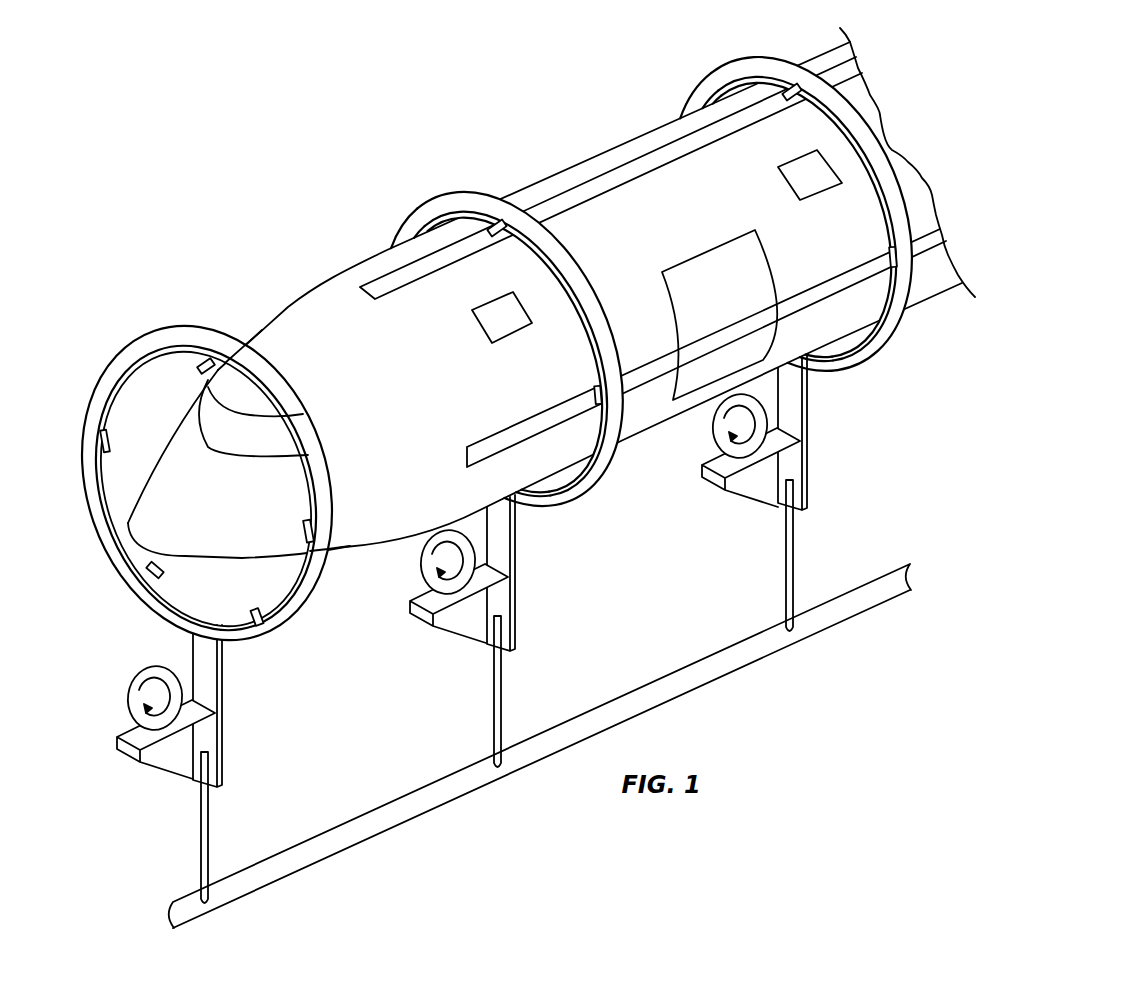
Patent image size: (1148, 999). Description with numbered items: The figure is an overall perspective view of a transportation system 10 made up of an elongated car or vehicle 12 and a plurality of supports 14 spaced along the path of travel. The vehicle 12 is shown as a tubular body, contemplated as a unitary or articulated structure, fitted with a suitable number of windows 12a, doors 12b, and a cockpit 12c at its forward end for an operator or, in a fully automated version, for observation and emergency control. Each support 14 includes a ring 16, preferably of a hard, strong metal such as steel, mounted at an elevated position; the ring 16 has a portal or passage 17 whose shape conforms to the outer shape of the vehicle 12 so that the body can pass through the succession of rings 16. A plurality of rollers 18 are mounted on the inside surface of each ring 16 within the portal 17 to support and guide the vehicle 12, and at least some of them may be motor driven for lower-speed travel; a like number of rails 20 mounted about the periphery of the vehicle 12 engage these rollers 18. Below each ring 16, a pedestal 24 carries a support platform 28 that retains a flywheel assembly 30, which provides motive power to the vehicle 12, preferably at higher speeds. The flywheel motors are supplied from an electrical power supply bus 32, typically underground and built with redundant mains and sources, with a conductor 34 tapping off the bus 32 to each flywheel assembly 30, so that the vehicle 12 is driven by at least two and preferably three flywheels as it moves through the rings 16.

The transportation system 10 is at (306, 200).
The car or vehicle 12 is at (618, 142).
The windows 12a is at (514, 338).
The doors 12b is at (712, 250).
The cockpit 12c is at (242, 450).
The support 14 is at (479, 629).
The ring 16 is at (310, 617).
The portal or passage 17 is at (190, 598).
The rollers 18 is at (792, 84).
The rails 20 is at (592, 200).
The pedestal 24 is at (224, 768).
The support platform 28 is at (120, 752).
The flywheel assembly 30 is at (128, 702).
The electrical power supply bus 32 is at (388, 832).
The conductor 34 is at (212, 844).